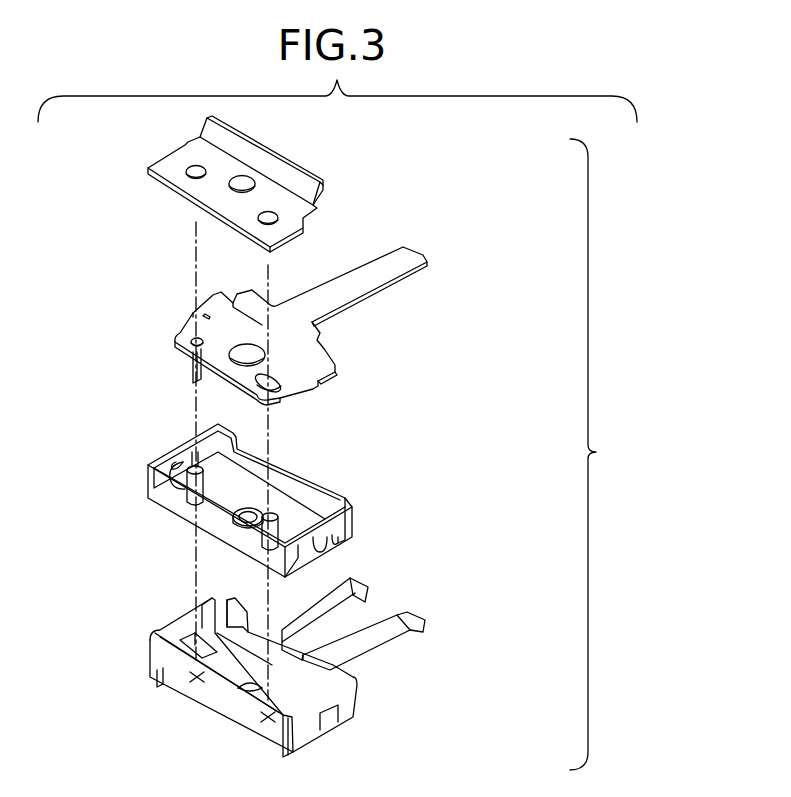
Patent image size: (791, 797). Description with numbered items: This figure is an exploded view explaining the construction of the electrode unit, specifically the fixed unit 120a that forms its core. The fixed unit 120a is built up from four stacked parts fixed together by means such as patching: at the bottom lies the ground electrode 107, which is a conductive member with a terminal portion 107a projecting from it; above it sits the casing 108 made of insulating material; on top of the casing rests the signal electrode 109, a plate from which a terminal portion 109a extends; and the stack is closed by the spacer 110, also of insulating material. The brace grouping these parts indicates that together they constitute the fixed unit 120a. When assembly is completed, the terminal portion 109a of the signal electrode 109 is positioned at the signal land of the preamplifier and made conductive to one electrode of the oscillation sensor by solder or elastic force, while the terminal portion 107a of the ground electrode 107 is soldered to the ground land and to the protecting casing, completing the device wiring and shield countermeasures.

The ground electrode 107 is at (357, 695).
The terminal portion of the ground electrode 107a is at (152, 685).
The casing 108 is at (352, 532).
The signal electrode 109 is at (335, 373).
The terminal portion of the signal electrode 109a is at (190, 382).
The spacer 110 is at (327, 202).
The fixed unit 120a is at (603, 453).